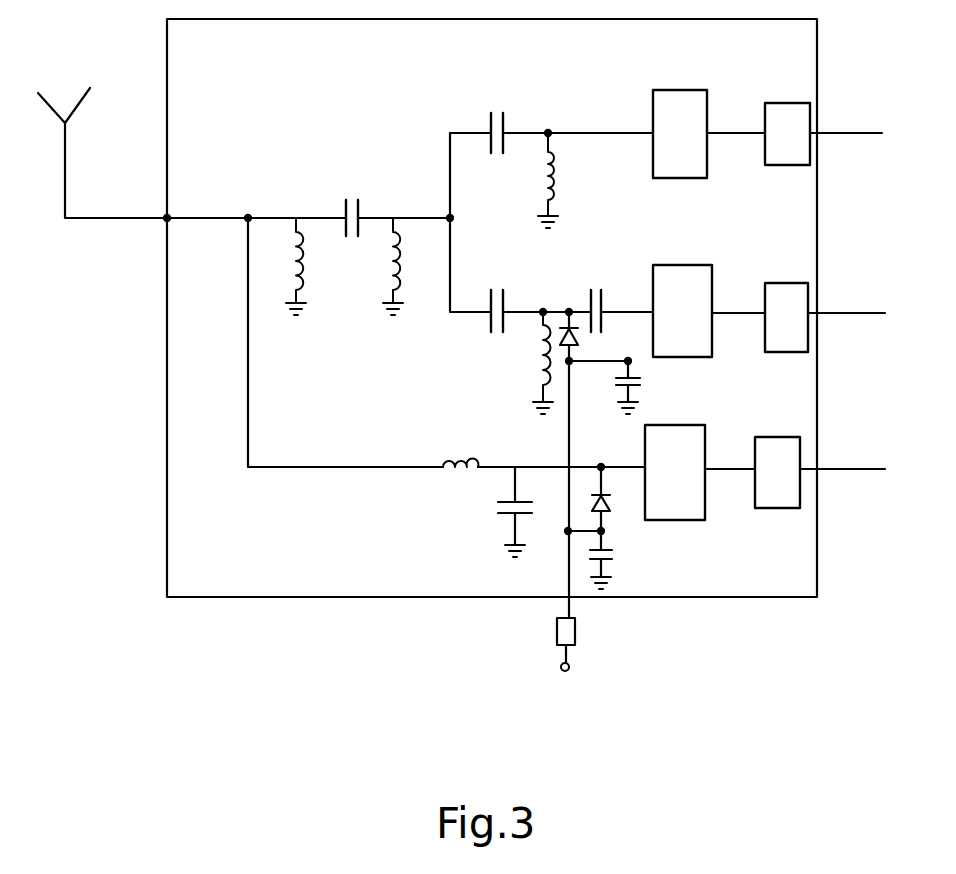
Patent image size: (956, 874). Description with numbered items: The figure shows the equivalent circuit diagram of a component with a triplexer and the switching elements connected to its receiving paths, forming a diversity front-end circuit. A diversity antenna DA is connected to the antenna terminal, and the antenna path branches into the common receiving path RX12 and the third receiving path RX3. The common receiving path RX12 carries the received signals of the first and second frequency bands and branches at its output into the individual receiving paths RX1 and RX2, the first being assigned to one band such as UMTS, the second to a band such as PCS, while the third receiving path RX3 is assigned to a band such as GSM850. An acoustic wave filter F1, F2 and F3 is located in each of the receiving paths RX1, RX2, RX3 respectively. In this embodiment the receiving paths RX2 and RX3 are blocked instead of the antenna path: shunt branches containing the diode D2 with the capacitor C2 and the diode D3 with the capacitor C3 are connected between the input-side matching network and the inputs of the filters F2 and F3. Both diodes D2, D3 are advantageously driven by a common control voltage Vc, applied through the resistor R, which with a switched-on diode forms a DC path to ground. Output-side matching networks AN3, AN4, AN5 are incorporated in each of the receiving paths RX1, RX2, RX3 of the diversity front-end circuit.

The diversity antenna DA is at (160, 210).
The common receiving path RX12 is at (421, 218).
The diode D2 is at (562, 306).
The capacitor C2 is at (652, 381).
The acoustic wave filter F1 is at (707, 103).
The acoustic wave filter F2 is at (712, 282).
The acoustic wave filter F3 is at (705, 436).
The output-side matching network AN3 is at (787, 103).
The output-side matching network AN4 is at (786, 283).
The output-side matching network AN5 is at (780, 437).
The first receiving path RX1 is at (843, 133).
The second receiving path RX2 is at (838, 313).
The third receiving path RX3 is at (835, 469).
The diode D3 is at (606, 514).
The capacitor C3 is at (614, 564).
The resistor R is at (578, 630).
The control voltage Vc is at (545, 665).